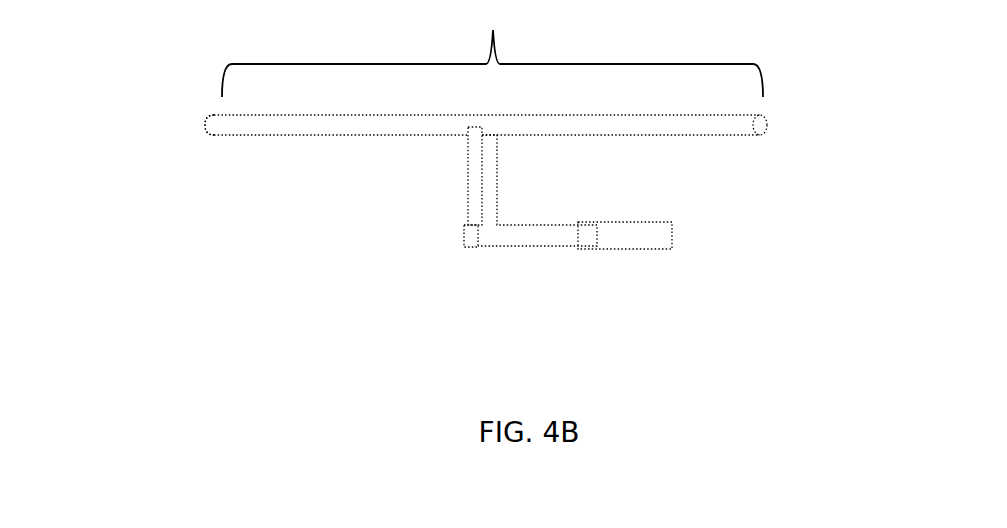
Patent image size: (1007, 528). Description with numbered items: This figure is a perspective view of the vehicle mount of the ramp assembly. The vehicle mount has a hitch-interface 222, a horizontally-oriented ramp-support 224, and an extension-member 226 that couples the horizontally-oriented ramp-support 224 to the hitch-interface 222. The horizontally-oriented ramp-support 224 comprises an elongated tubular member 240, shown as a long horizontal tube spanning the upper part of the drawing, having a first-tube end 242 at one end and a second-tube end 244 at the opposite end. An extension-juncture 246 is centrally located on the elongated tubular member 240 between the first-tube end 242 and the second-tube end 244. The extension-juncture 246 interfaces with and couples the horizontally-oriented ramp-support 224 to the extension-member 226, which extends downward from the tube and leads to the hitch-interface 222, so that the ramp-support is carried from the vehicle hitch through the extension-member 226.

The hitch-interface 222 is at (643, 243).
The horizontally-oriented ramp-support 224 is at (492, 50).
The extension-member 226 is at (474, 187).
The elongated tubular member 240 is at (313, 138).
The first-tube end 242 is at (207, 121).
The second-tube end 244 is at (767, 128).
The extension-juncture 246 is at (487, 133).